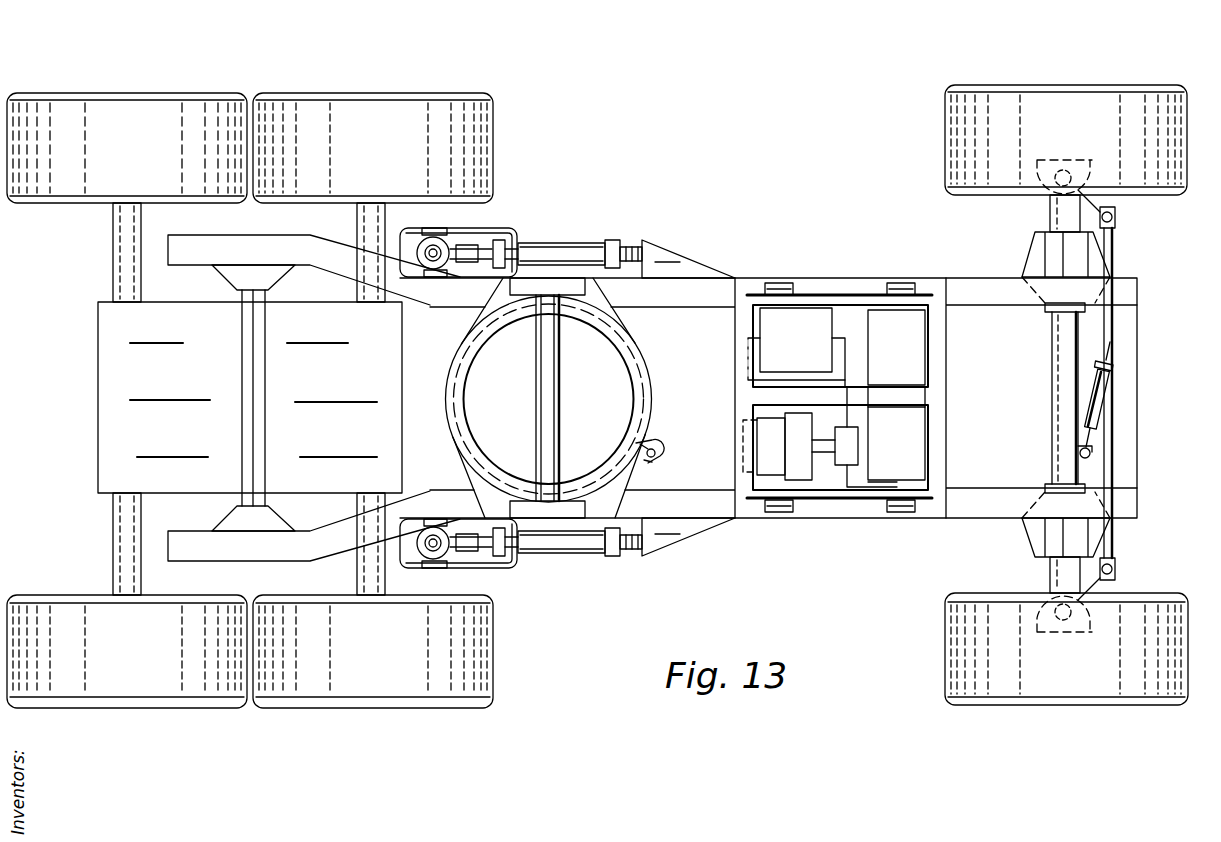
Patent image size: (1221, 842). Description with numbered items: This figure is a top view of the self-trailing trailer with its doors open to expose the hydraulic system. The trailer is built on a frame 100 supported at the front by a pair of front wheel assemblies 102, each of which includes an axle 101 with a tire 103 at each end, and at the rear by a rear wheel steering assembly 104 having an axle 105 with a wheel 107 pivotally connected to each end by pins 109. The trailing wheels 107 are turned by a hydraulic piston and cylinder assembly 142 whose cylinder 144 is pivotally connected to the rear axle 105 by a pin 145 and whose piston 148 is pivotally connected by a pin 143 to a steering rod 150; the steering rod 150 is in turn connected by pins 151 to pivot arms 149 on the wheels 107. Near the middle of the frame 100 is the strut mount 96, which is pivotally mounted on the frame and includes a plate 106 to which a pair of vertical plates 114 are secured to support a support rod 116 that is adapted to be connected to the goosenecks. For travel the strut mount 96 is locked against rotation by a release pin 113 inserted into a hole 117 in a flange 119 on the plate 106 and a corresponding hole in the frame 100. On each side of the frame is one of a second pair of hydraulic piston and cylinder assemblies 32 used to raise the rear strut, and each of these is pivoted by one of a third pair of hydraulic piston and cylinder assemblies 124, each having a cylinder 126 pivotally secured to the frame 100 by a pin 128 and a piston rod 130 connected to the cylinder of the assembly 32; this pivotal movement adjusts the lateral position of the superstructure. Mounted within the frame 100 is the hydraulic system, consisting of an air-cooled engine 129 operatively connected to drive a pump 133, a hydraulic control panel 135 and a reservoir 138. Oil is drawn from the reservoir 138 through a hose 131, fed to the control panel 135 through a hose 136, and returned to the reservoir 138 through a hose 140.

The hydraulic piston and cylinder assembly 32 is at (437, 208).
The strut mount 96 is at (458, 328).
The frame 100 is at (753, 268).
The axle 101 is at (112, 540).
The front wheel assembly 102 is at (276, 88).
The tire 103 is at (121, 93).
The rear wheel steering assembly 104 is at (964, 708).
The axle 105 is at (1052, 346).
The plate 106 is at (640, 368).
The wheel 107 is at (1062, 93).
The pin 109 is at (1050, 195).
The release pin 113 is at (660, 457).
The vertical plate 114 is at (529, 292).
The support rod 116 is at (560, 401).
The hole 117 is at (654, 447).
The flange 119 is at (646, 462).
The hydraulic piston and cylinder assembly 124 is at (570, 236).
The cylinder 126 is at (605, 242).
The pin 128 is at (637, 244).
The air-cooled engine 129 is at (806, 490).
The piston rod 130 is at (498, 242).
The hose 131 is at (875, 492).
The pump 133 is at (846, 470).
The hydraulic control panel 135 is at (802, 306).
The hose 136 is at (846, 355).
The reservoir 138 is at (918, 441).
The hose 140 is at (748, 371).
The hydraulic piston and cylinder assembly 142 is at (1080, 420).
The pin 143 is at (1114, 352).
The cylinder 144 is at (1092, 388).
The pin 145 is at (1080, 458).
The piston 148 is at (1115, 358).
The pivot arm 149 is at (1094, 200).
The steering rod 150 is at (1116, 266).
The pin 151 is at (1116, 218).